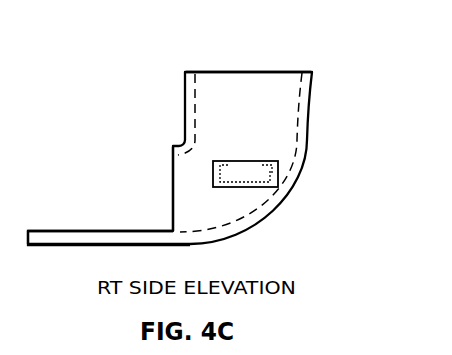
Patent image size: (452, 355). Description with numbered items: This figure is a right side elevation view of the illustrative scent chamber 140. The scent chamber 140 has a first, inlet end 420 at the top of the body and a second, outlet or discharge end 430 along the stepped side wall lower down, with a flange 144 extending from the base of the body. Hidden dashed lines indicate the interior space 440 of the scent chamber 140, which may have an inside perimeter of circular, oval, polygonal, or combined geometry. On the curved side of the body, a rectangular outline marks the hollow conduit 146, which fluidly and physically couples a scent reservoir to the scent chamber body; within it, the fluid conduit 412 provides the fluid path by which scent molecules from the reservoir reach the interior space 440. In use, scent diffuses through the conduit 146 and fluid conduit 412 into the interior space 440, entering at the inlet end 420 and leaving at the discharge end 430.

The scent chamber 140 is at (304, 31).
The first (inlet) end 420 is at (244, 70).
The interior space 440 is at (266, 133).
The second (outlet or discharge) end 430 is at (173, 184).
The base flange 144 is at (43, 246).
The hollow conduit 146 is at (283, 172).
The fluid conduit 412 is at (257, 170).